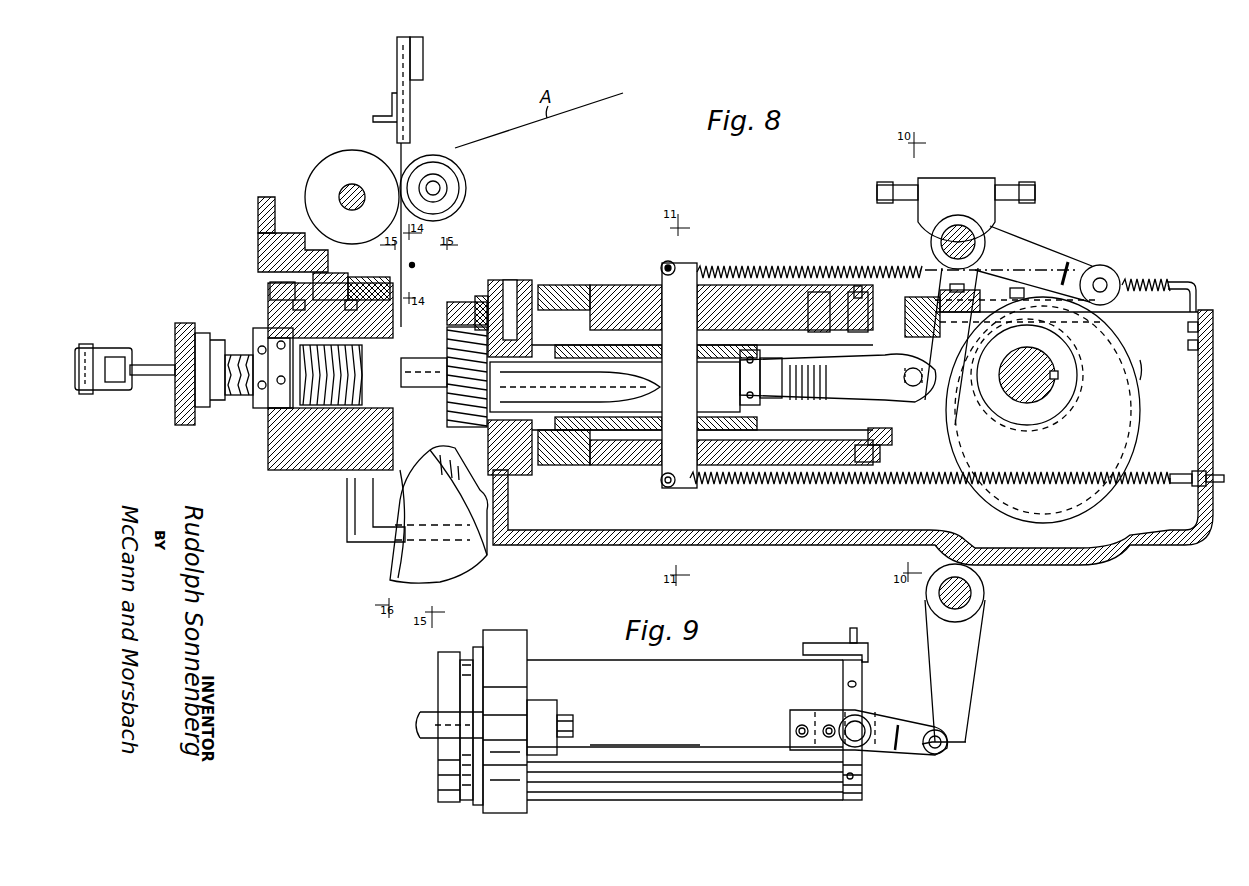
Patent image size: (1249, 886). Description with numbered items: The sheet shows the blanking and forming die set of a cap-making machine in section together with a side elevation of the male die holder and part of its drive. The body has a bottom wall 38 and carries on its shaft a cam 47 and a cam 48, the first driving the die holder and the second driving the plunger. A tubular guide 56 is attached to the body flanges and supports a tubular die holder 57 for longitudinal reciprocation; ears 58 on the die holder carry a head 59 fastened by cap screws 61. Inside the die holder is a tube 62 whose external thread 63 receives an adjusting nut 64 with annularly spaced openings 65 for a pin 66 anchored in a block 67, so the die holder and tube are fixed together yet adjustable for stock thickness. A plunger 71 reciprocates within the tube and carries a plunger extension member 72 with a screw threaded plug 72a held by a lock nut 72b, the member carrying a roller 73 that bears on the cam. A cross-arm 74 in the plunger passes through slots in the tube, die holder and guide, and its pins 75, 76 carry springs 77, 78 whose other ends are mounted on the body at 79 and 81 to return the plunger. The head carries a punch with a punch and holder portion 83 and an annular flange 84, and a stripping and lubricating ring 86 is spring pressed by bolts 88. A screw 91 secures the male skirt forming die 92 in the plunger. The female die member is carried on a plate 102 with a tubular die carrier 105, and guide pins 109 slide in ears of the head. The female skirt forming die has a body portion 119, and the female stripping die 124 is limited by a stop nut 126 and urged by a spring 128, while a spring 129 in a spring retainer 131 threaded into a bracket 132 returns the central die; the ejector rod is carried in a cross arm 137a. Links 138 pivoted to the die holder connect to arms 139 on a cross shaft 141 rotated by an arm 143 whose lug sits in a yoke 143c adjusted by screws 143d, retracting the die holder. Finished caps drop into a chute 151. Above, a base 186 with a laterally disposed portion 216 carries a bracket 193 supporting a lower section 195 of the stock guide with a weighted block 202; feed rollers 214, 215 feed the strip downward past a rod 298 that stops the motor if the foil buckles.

In FIG. 8, the bottom wall 38 is at (790, 545).
In FIG. 8, the cam 47 is at (1141, 369).
In FIG. 8, the cam 48 is at (1043, 410).
In FIG. 8, the tubular guide 56 is at (556, 285).
In FIG. 8, the tubular die holder 57 is at (600, 300).
In FIG. 9, the tubular die holder 57 is at (685, 730).
In FIG. 9, the ears 58 is at (546, 705).
In FIG. 8, the head 59 is at (500, 280).
In FIG. 9, the head 59 is at (505, 721).
In FIG. 9, the cap screws 61 is at (575, 726).
In FIG. 8, the tube 62 is at (612, 345).
In FIG. 8, the external thread 63 is at (892, 436).
In FIG. 8, the adjusting nut 64 is at (873, 455).
In FIG. 9, the openings 65 is at (857, 774).
In FIG. 8, the pin 66 is at (857, 286).
In FIG. 9, the pin 66 is at (853, 627).
In FIG. 8, the block 67 is at (820, 292).
In FIG. 9, the block 67 is at (803, 648).
In FIG. 8, the plunger 71 is at (638, 358).
In FIG. 8, the plunger extension member 72 is at (832, 440).
In FIG. 8, the screw threaded plug 72a is at (752, 350).
In FIG. 8, the lock nut 72b is at (790, 358).
In FIG. 8, the roller 73 is at (913, 404).
In FIG. 8, the cross-arm 74 is at (679, 375).
In FIG. 8, the pin 75 is at (673, 263).
In FIG. 8, the pin 76 is at (660, 481).
In FIG. 8, the spring 77 is at (716, 266).
In FIG. 8, the spring 78 is at (770, 485).
In FIG. 8, the spring mounting 79 is at (1194, 280).
In FIG. 8, the spring mounting 81 is at (1180, 472).
In FIG. 8, the punch and holder portion 83 is at (465, 302).
In FIG. 8, the annular flange 84 is at (482, 296).
In FIG. 9, the stripping and lubricating ring 86 is at (440, 670).
In FIG. 9, the bolts 88 is at (468, 657).
In FIG. 8, the screw 91 is at (511, 290).
In FIG. 8, the male skirt forming die 92 is at (450, 413).
In FIG. 8, the plate 102 is at (310, 466).
In FIG. 8, the tubular die carrier 105 is at (268, 452).
In FIG. 8, the guide pins 109 is at (425, 357).
In FIG. 9, the guide pins 109 is at (422, 720).
In FIG. 8, the body portion 119 is at (345, 470).
In FIG. 8, the female stripping die 124 is at (376, 388).
In FIG. 8, the stop nut 126 is at (253, 402).
In FIG. 8, the spring 128 is at (268, 425).
In FIG. 8, the spring 129 is at (239, 355).
In FIG. 8, the spring retainer 131 is at (207, 333).
In FIG. 8, the bracket 132 is at (180, 323).
In FIG. 8, the cross arm 137a is at (80, 392).
In FIG. 9, the links 138 is at (892, 722).
In FIG. 9, the arms 139 is at (955, 666).
In FIG. 8, the cross shaft 141 is at (975, 240).
In FIG. 9, the cross shaft 141 is at (972, 592).
In FIG. 8, the arm 143 is at (1030, 248).
In FIG. 8, the yoke 143c is at (953, 184).
In FIG. 8, the screws 143d is at (1030, 192).
In FIG. 8, the chute 151 is at (486, 558).
In FIG. 8, the base 186 is at (258, 236).
In FIG. 8, the bracket 193 is at (391, 110).
In FIG. 8, the lower section 195 is at (400, 52).
In FIG. 8, the block 202 is at (432, 63).
In FIG. 8, the roller 214 is at (333, 165).
In FIG. 8, the roller 215 is at (461, 179).
In FIG. 8, the laterally disposed portion 216 is at (258, 200).
In FIG. 8, the rod 298 is at (415, 265).